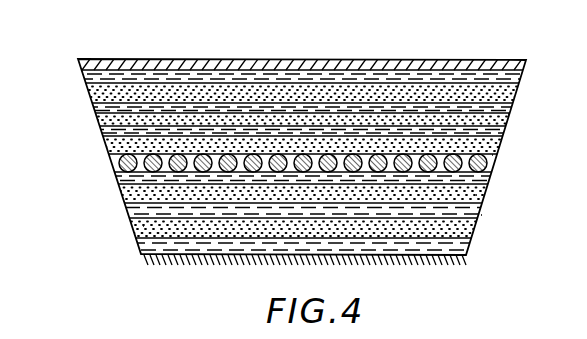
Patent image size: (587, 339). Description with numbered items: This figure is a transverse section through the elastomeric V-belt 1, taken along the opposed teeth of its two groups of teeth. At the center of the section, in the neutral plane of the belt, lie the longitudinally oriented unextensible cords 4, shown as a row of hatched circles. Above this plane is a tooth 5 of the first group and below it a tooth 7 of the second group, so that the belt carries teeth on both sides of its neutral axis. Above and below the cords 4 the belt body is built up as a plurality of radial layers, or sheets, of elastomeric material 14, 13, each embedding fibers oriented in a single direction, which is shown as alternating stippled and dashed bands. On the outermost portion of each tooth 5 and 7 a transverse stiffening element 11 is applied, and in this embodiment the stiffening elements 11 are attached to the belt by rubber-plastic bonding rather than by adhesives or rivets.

The V-belt 1 is at (527, 84).
The unextensible cords 4 is at (112, 153).
The teeth of first group 5 is at (90, 112).
The teeth of second group 7 is at (133, 218).
The stiffening elements 11 is at (352, 52).
The radial layers of elastomeric material 13 is at (473, 207).
The radial layers of elastomeric material 14 is at (484, 147).